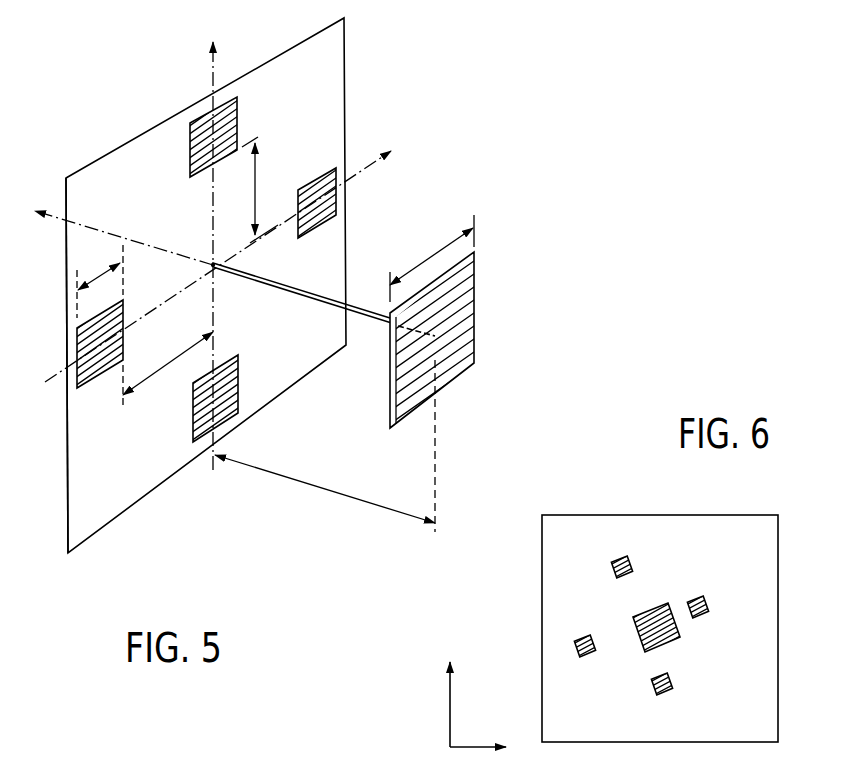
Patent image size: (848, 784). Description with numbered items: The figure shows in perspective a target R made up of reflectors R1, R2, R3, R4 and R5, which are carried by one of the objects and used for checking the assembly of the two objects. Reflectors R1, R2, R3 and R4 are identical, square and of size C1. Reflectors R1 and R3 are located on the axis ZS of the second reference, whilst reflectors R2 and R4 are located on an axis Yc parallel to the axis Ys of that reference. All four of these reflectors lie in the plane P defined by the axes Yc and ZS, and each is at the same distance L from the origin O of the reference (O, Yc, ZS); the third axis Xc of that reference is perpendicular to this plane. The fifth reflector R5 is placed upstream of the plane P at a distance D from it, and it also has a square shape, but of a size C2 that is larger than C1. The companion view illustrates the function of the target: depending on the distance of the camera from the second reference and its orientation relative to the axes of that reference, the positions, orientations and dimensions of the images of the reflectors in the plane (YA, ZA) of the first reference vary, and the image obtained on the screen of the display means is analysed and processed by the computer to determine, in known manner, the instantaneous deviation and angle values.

In FIG. 5, the plane of the reflectors P is at (108, 163).
In FIG. 5, the target R is at (67, 512).
In FIG. 5, the reflector R1 is at (198, 125).
In FIG. 5, the reflector R2 is at (330, 170).
In FIG. 5, the reflector R3 is at (193, 428).
In FIG. 5, the reflector R4 is at (77, 374).
In FIG. 5, the reflector R5 is at (478, 282).
In FIG. 5, the origin O is at (213, 265).
In FIG. 5, the axis Xc is at (113, 224).
In FIG. 5, the axis Yc is at (238, 260).
In FIG. 5, the axis Zs ZS is at (201, 238).
In FIG. 5, the distance L is at (200, 271).
In FIG. 5, the size C1 is at (98, 281).
In FIG. 5, the size C2 is at (432, 258).
In FIG. 5, the distance D is at (325, 446).
In FIG. 6, the axis Za ZA is at (471, 692).
In FIG. 6, the axis Ya YA is at (487, 732).